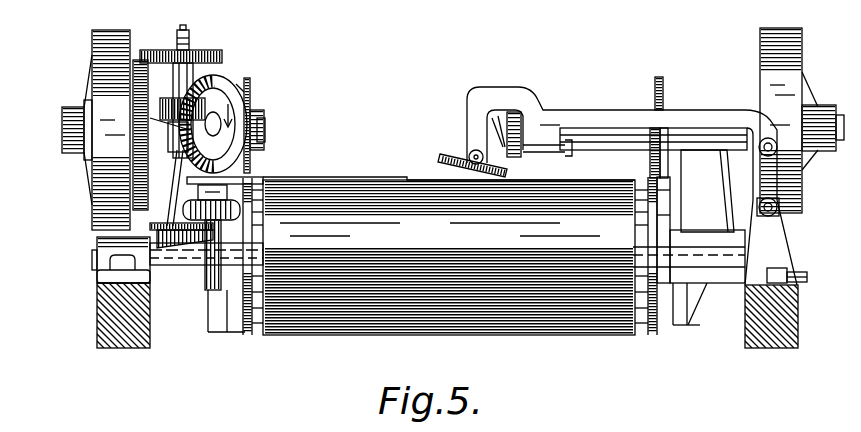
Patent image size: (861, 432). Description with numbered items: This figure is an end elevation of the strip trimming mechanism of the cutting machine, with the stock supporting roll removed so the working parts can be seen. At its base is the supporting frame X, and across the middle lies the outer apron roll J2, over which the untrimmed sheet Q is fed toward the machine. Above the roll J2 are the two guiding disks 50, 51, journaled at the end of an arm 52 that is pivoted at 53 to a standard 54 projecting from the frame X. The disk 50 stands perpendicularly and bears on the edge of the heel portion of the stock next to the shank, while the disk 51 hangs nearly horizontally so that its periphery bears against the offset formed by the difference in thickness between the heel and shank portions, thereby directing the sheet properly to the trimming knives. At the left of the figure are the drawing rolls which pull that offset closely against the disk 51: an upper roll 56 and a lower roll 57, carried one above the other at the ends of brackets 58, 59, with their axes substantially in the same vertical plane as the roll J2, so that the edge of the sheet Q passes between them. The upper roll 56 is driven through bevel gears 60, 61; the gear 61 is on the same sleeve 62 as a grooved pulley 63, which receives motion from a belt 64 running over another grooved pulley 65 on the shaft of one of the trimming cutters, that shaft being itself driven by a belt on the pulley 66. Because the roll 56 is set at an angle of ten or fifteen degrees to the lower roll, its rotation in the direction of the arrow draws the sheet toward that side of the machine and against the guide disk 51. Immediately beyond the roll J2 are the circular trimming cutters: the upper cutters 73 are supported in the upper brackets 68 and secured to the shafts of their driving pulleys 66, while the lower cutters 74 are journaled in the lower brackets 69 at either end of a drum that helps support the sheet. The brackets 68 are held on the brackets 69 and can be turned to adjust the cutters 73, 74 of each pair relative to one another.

The outer apron supporting roll J2 is at (600, 334).
The untrimmed sheet Q is at (270, 178).
The pulley 66 is at (108, 31).
The belt 64 is at (222, 57).
The grooved pulley 63 is at (212, 51).
The sleeve 62 is at (176, 72).
The upper roll 56 is at (223, 80).
The upper cutter 73 is at (240, 88).
The bevel gear 61 is at (249, 86).
The bevel gear 60 is at (264, 137).
The bracket 58 is at (176, 164).
The upper bracket 68 is at (178, 192).
The lower roll 57 is at (199, 193).
The bracket 59 is at (183, 243).
The grooved pulley 65 is at (172, 224).
The supporting frame X is at (97, 318).
The lower bracket 69 is at (187, 287).
The lower cutter 74 is at (248, 337).
The arm 52 is at (598, 105).
The standard 54 is at (760, 166).
The pivot 53 is at (776, 148).
The guiding disk 50 is at (522, 157).
The guiding disk 51 is at (443, 158).